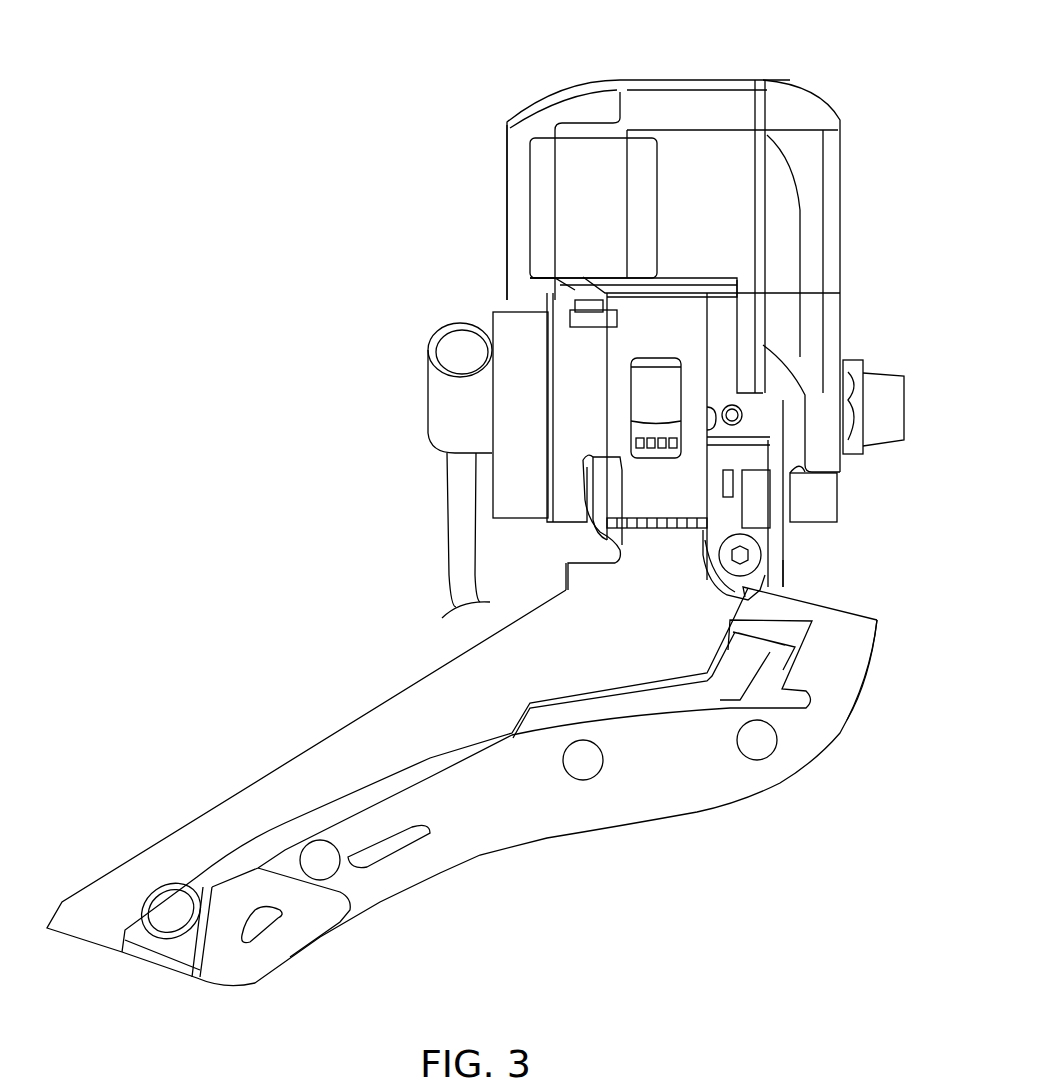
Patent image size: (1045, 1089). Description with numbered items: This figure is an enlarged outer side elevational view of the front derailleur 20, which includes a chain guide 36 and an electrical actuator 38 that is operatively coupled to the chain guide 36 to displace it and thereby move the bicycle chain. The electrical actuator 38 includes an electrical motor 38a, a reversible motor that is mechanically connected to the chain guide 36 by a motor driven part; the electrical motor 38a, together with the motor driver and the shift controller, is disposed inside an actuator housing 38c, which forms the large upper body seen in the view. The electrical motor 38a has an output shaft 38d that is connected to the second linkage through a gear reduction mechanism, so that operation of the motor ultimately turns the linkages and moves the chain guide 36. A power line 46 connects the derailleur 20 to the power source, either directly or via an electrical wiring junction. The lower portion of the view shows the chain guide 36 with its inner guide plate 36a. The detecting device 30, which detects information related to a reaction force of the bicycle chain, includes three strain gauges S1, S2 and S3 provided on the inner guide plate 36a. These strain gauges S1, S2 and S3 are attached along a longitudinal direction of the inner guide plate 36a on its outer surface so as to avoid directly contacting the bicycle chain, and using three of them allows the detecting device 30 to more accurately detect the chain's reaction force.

The derailleur 20 is at (330, 166).
The electrical actuator 38 is at (710, 80).
The electrical motor 38a is at (530, 176).
The actuator housing 38c is at (507, 138).
The output shaft 38d is at (553, 306).
The power line 46 is at (437, 507).
The chain guide 36 is at (302, 745).
The inner guide plate 36a is at (797, 766).
The detecting device 30 is at (452, 928).
The strain gauge S1 is at (340, 878).
The strain gauge S2 is at (590, 780).
The strain gauge S3 is at (742, 760).